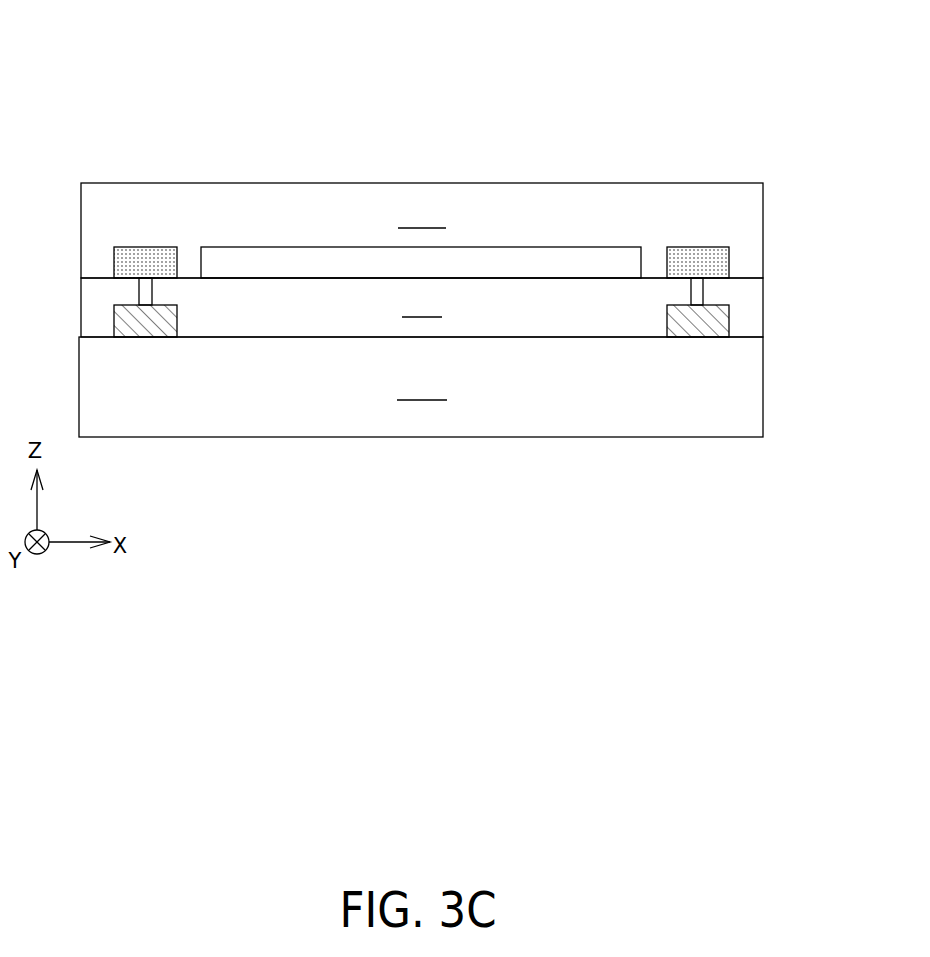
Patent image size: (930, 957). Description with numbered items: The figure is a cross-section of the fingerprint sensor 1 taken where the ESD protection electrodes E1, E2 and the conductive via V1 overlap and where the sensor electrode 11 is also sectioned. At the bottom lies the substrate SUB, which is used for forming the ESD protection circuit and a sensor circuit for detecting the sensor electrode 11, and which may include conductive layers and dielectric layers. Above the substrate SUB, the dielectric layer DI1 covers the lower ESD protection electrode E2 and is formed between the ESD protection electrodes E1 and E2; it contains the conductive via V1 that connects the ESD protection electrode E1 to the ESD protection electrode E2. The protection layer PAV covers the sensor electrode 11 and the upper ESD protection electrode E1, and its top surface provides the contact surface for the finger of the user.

The fingerprint sensor 1 is at (443, 255).
The sensor electrode 11 is at (528, 258).
The conductive via V1 is at (695, 295).
The ESD protection electrode E1 is at (698, 257).
The ESD protection electrode E2 is at (700, 328).
The protection layer PAV is at (422, 230).
The dielectric layer DI1 is at (422, 307).
The substrate SUB is at (421, 387).